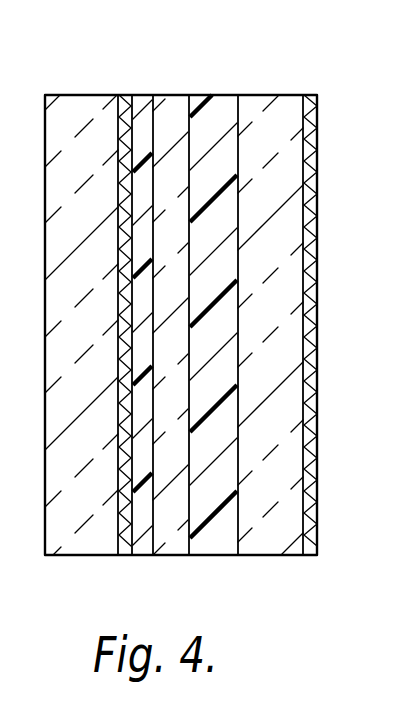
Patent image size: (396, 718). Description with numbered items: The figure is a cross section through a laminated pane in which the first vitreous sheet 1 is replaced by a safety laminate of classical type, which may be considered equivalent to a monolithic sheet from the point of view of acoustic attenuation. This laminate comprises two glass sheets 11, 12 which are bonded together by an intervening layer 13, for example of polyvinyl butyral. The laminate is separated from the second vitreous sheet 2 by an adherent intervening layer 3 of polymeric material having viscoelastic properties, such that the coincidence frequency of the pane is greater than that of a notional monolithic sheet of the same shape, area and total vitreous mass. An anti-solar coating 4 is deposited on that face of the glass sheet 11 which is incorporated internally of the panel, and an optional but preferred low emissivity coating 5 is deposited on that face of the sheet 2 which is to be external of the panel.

The first vitreous sheet 1 is at (45, 87).
The vitreous sheet 2 is at (257, 108).
The intervening layer 3 is at (215, 107).
The anti-solar coating 4 is at (118, 547).
The low emissivity coating 5 is at (307, 540).
The glass sheet 11 is at (78, 540).
The glass sheet 12 is at (177, 543).
The intervening layer 13 is at (140, 547).